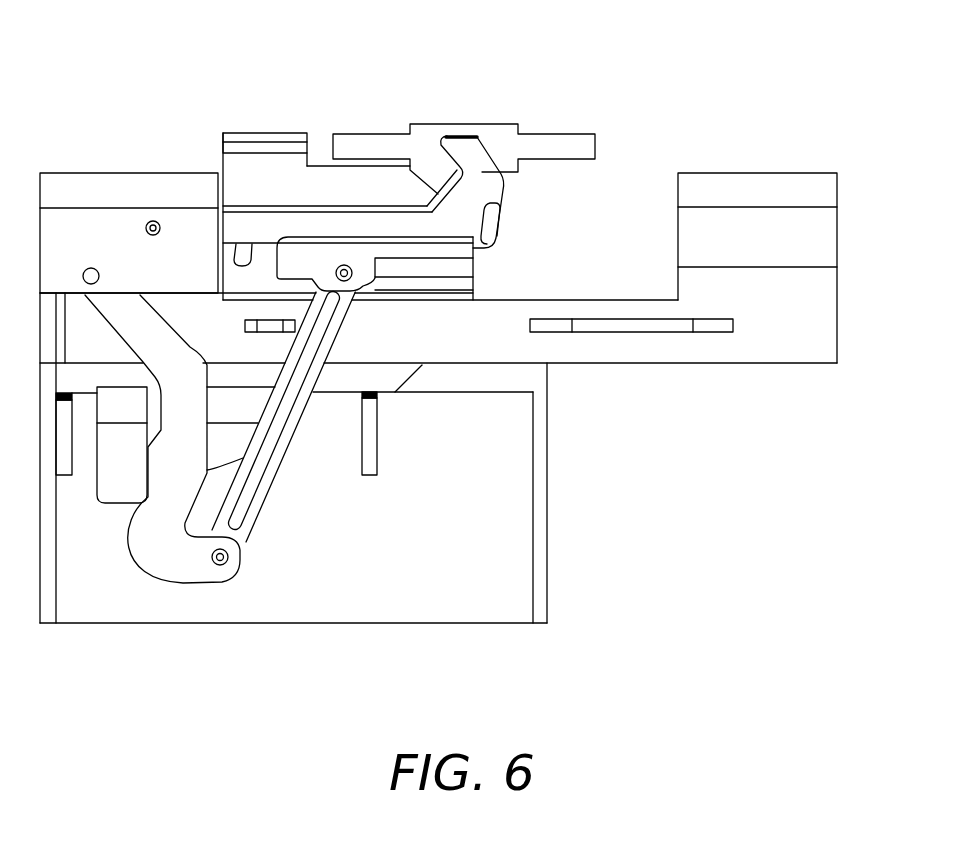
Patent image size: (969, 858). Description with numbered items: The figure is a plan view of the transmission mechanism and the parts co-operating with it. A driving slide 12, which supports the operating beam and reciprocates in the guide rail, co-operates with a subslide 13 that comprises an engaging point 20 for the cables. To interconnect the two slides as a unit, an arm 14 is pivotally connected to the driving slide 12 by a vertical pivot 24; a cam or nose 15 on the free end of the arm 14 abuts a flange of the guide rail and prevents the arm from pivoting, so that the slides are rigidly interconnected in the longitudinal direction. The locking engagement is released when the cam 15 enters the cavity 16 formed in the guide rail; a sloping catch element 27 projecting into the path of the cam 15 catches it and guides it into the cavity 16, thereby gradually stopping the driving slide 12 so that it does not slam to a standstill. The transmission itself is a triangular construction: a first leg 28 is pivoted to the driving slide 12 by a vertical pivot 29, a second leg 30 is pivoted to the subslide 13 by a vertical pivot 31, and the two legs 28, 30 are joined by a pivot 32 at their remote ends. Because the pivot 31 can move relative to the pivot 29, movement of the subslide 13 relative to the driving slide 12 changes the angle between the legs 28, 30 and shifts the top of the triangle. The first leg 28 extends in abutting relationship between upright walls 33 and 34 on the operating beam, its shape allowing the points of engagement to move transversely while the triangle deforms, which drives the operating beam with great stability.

The driving slide 12 is at (720, 187).
The subslide 13 is at (460, 272).
The arm 14 is at (270, 252).
The cam 15 is at (468, 160).
The cavity 16 is at (449, 137).
The engaging point 20 is at (253, 146).
The vertical pivot 24 is at (153, 221).
The catch element 27 is at (430, 160).
The first leg 28 is at (158, 562).
The vertical pivot 29 is at (90, 268).
The second leg 30 is at (262, 472).
The vertical pivot 31 is at (341, 265).
The pivot 32 is at (219, 566).
The upright wall 33 is at (110, 488).
The upright wall 34 is at (228, 455).